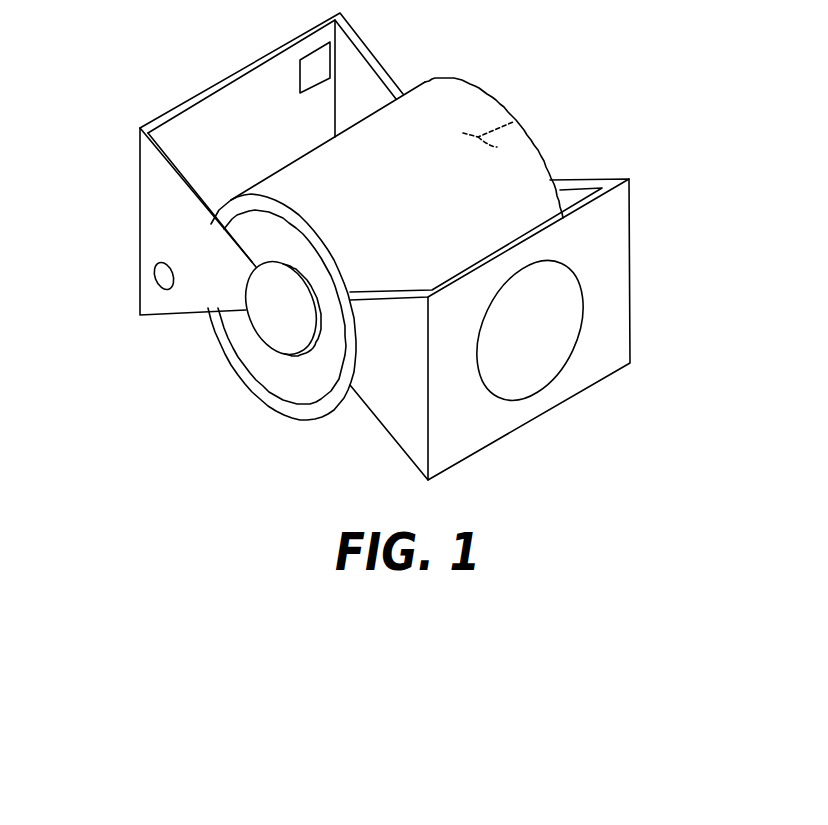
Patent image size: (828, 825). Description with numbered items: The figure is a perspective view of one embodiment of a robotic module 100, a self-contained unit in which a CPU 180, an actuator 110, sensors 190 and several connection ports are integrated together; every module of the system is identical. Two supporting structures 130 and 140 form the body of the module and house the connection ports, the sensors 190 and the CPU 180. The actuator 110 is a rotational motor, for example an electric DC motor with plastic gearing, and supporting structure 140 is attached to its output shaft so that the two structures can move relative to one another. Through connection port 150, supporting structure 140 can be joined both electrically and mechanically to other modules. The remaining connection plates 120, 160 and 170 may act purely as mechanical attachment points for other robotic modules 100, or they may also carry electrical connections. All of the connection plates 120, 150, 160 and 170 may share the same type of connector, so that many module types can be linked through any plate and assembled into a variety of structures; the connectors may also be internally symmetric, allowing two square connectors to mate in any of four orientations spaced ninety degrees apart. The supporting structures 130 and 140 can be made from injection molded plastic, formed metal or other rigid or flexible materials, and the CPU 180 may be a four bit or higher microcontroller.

The robotic module 100 is at (648, 128).
The actuator 110 is at (423, 120).
The connection plate 120 is at (550, 322).
The supporting structure 130 is at (408, 422).
The supporting structure 140 is at (155, 192).
The connection port 150 is at (213, 127).
The connection plate 160 is at (510, 125).
The connection plate 170 is at (275, 333).
The CPU 180 is at (313, 65).
The sensors 190 is at (155, 283).